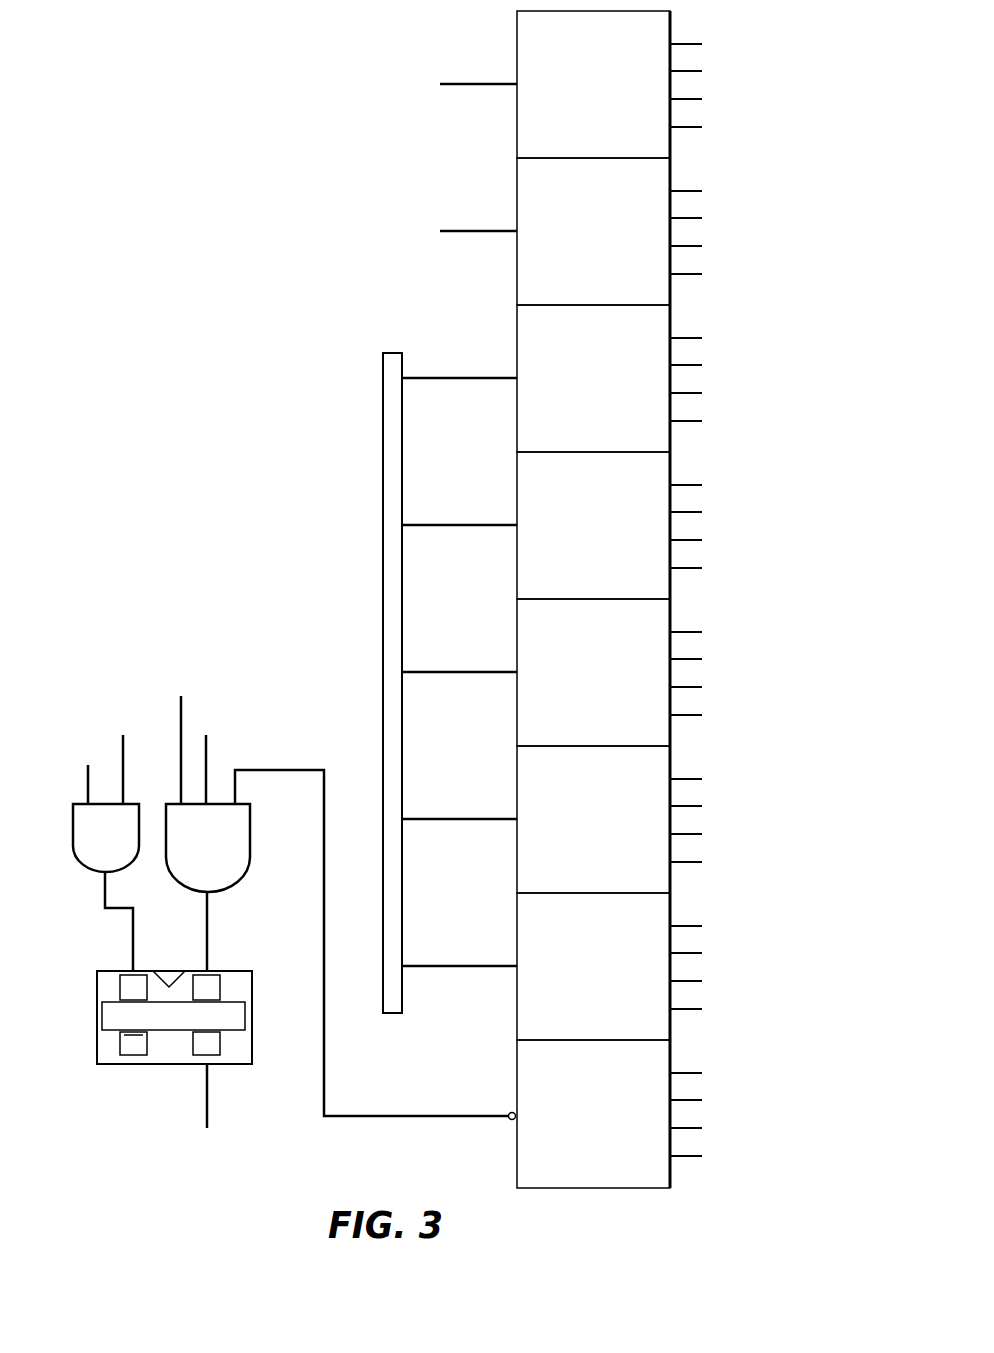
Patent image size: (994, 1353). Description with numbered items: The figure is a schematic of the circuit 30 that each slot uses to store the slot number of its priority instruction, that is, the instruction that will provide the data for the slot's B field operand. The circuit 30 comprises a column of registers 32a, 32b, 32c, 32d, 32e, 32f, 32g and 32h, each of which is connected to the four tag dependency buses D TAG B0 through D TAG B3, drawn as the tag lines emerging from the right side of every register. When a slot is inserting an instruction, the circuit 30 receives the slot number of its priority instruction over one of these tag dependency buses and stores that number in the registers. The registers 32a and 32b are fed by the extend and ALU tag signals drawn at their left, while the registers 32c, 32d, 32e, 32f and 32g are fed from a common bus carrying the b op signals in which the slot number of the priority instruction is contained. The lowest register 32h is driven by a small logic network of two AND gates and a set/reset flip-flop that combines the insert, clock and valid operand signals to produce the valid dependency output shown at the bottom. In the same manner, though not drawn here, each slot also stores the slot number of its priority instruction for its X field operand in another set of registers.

The circuit 30 is at (232, 80).
The register 32a is at (517, 35).
The register 32b is at (517, 182).
The register 32c is at (517, 329).
The register 32d is at (517, 476).
The register 32e is at (517, 623).
The register 32f is at (517, 770).
The register 32g is at (517, 917).
The register 32h is at (517, 1065).